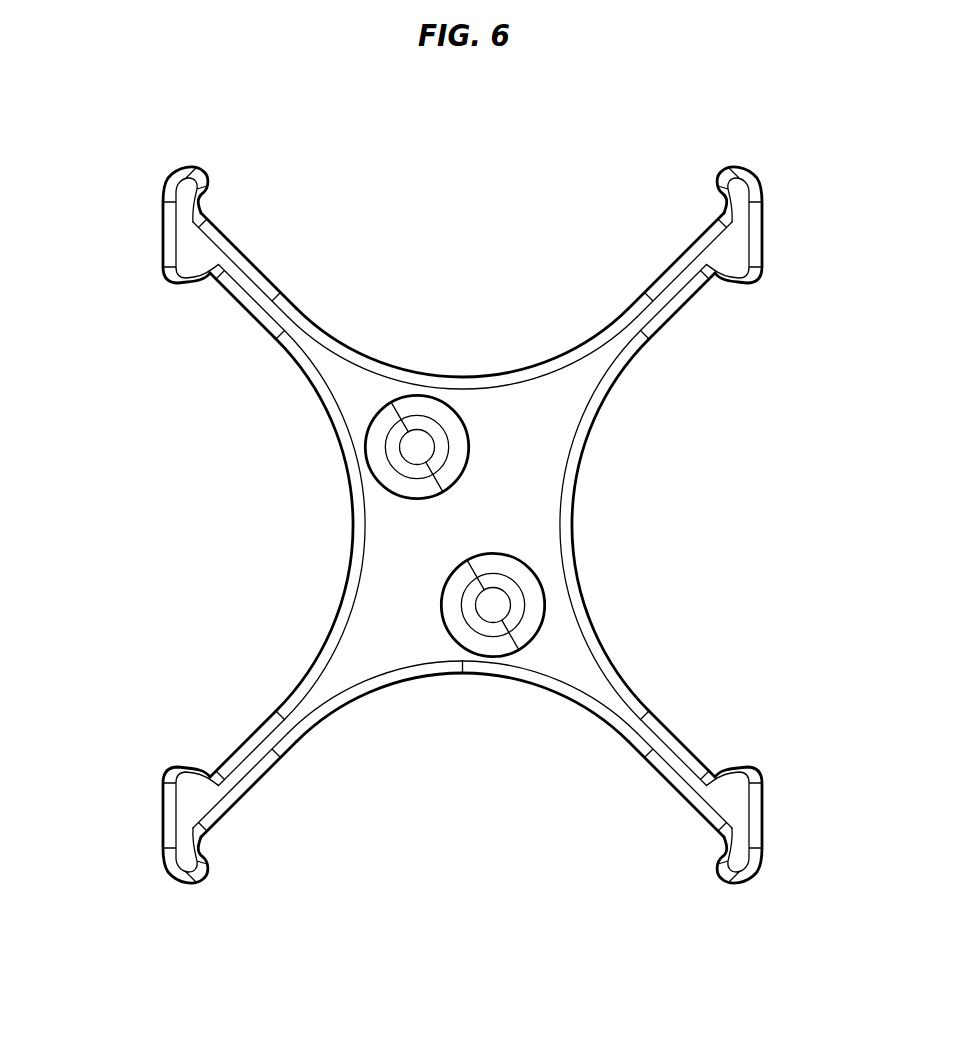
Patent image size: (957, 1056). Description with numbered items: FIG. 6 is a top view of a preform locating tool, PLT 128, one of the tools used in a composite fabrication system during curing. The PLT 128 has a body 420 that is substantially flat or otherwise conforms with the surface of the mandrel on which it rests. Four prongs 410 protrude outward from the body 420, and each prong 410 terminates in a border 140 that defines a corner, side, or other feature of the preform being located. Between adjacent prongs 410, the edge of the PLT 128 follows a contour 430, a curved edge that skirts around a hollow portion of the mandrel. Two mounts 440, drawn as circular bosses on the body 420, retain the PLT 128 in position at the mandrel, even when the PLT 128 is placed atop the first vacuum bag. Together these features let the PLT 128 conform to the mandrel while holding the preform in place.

The PLT 128 is at (632, 125).
The border 140 is at (155, 242).
The prong 410 is at (265, 284).
The body 420 is at (522, 527).
The contour 430 is at (388, 360).
The mount 440 is at (458, 446).